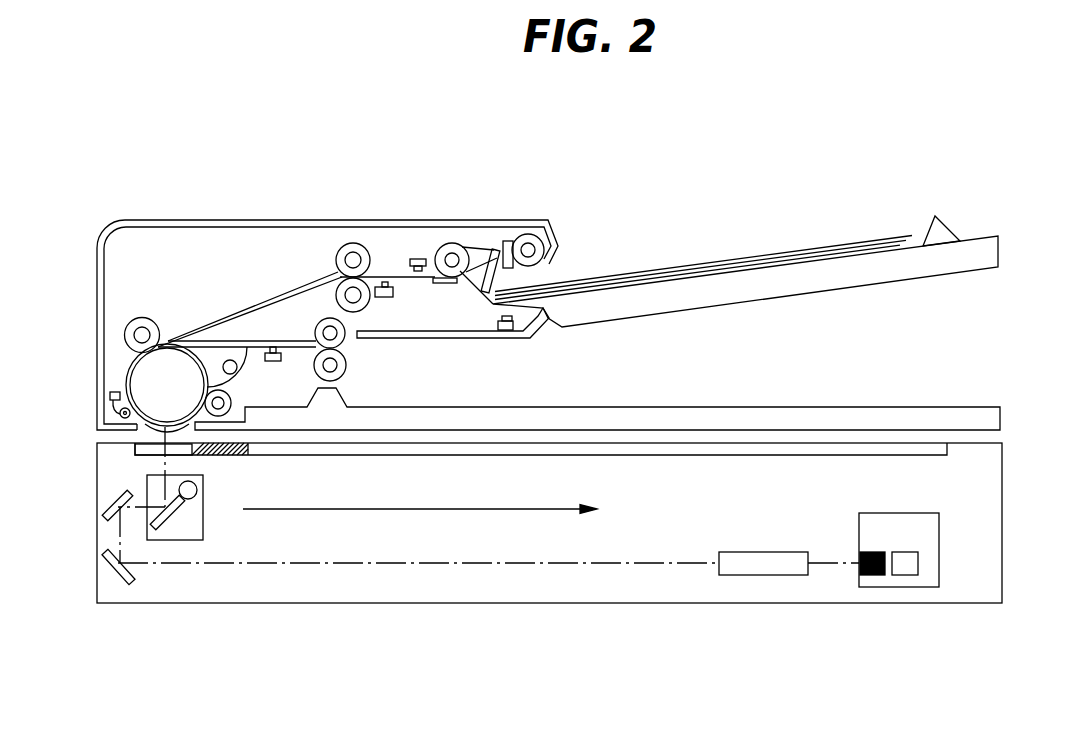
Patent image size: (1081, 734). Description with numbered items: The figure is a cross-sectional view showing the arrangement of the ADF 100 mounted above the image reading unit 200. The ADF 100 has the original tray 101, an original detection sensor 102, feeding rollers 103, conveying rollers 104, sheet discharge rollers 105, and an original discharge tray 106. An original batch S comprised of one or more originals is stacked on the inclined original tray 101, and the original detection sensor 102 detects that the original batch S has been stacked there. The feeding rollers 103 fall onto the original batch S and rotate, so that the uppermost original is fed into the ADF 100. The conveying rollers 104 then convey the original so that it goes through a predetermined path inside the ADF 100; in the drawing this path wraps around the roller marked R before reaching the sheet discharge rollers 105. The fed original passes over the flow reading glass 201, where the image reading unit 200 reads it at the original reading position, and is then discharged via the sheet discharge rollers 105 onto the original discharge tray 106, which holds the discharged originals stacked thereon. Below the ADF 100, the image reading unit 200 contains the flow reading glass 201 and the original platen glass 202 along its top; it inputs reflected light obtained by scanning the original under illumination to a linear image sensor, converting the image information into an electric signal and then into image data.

The ADF 100 is at (1023, 157).
The original tray 101 is at (982, 245).
The original detection sensor 102 is at (497, 247).
The feeding rollers 103 is at (532, 237).
The conveying rollers 104 is at (337, 262).
The sheet discharge rollers 105 is at (347, 363).
The original discharge tray 106 is at (750, 415).
The image reading unit 200 is at (1022, 443).
The flow reading glass 201 is at (152, 450).
The original platen glass 202 is at (318, 448).
The original batch S is at (745, 255).
The reading roller R is at (178, 400).